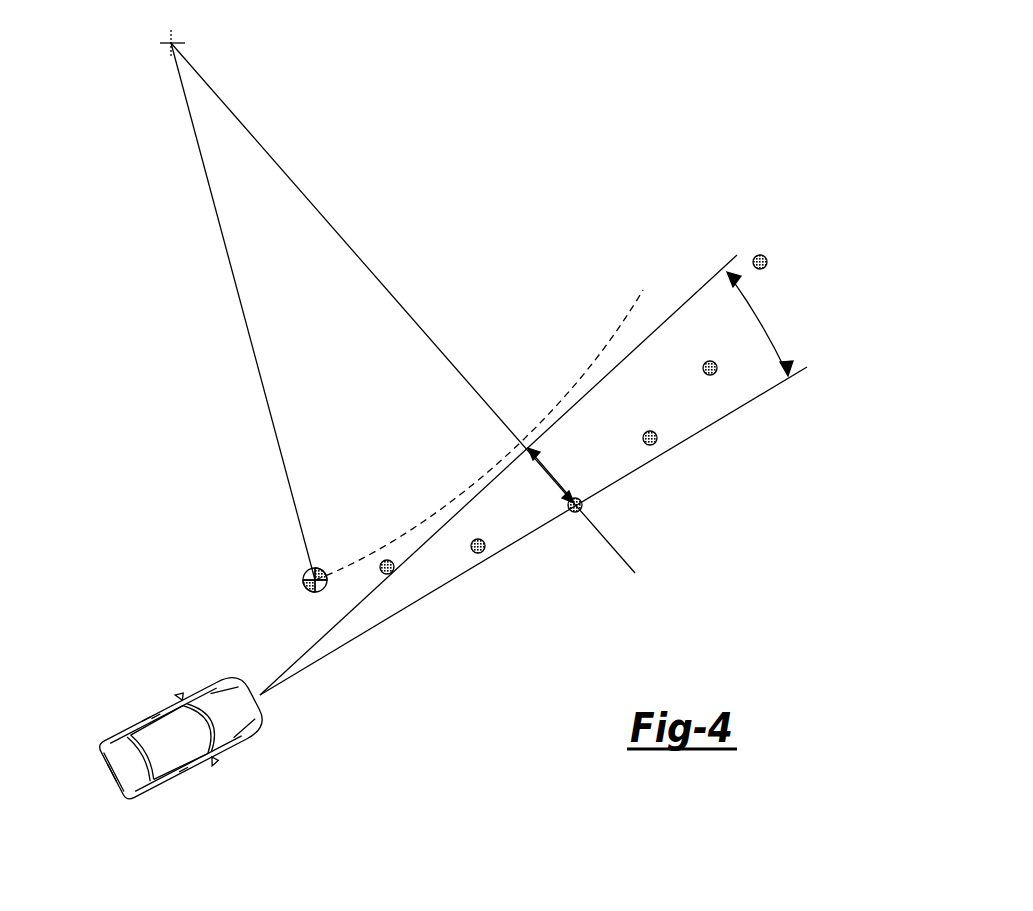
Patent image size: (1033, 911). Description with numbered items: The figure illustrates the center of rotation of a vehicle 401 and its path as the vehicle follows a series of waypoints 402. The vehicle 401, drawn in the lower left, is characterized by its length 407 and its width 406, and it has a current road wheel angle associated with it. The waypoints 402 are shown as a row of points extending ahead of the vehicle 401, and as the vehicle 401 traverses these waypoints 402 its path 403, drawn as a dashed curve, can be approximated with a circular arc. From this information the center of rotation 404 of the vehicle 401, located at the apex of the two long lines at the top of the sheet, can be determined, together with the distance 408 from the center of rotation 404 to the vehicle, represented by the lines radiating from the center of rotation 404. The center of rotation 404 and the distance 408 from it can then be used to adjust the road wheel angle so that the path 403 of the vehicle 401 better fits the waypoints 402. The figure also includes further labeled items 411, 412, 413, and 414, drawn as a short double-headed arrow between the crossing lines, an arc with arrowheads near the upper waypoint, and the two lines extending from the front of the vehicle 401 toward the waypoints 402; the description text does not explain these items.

The vehicle 401 is at (220, 811).
The waypoints 402 is at (768, 262).
The path 403 is at (617, 332).
The center of rotation 404 is at (171, 43).
The width 406 is at (108, 770).
The length 407 is at (152, 692).
The distance from the center of rotation 408 is at (349, 374).
The lateral offset 411 is at (552, 472).
The heading angle 412 is at (768, 315).
The lane boundary line 413 is at (437, 592).
The lane boundary line 414 is at (308, 648).